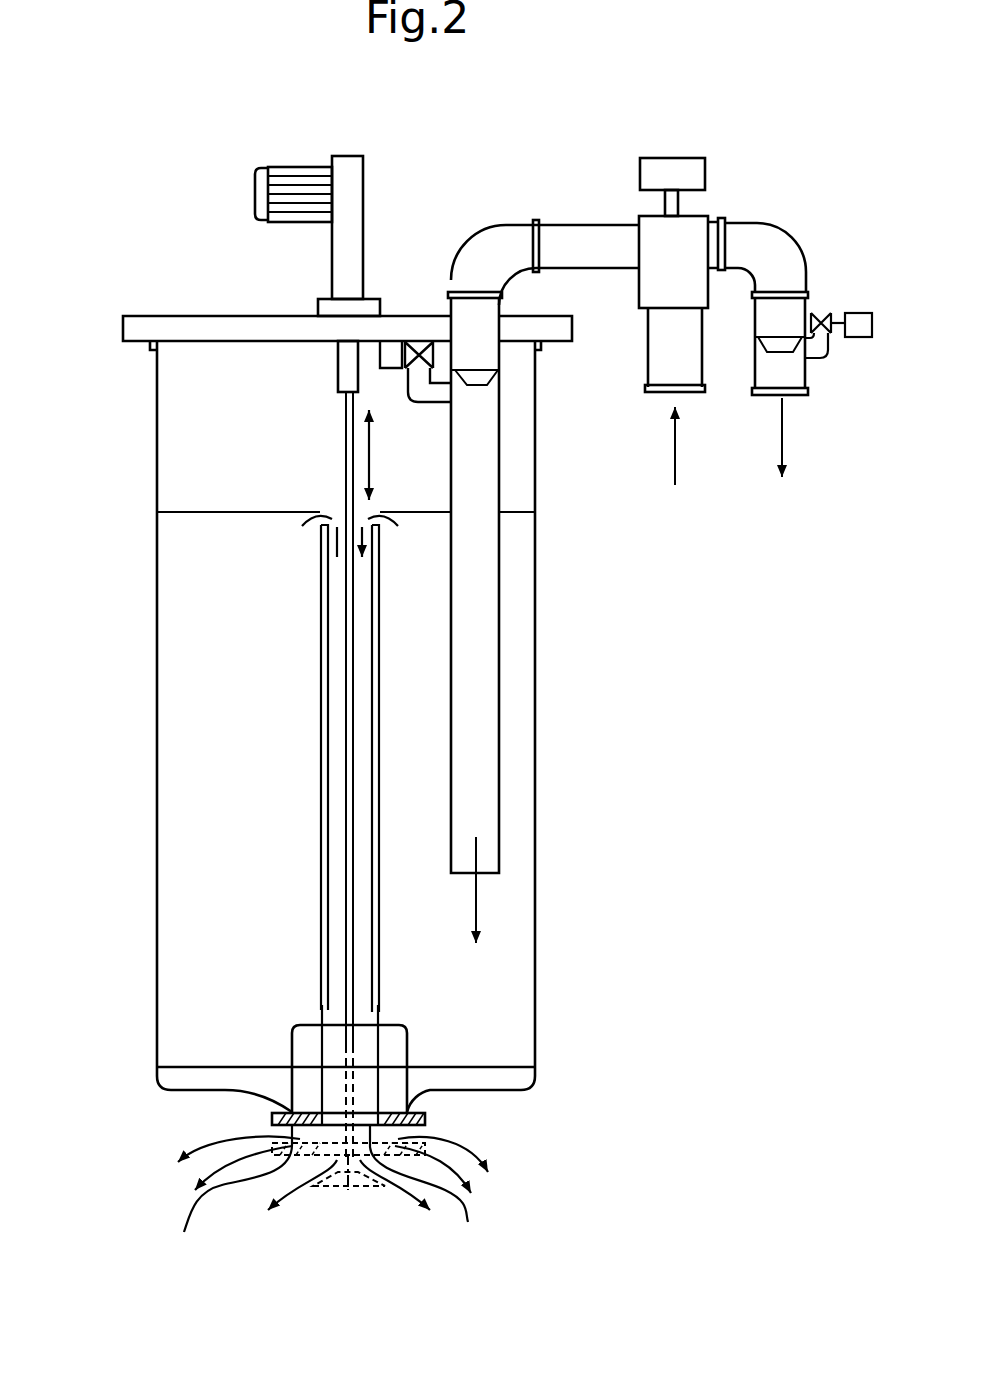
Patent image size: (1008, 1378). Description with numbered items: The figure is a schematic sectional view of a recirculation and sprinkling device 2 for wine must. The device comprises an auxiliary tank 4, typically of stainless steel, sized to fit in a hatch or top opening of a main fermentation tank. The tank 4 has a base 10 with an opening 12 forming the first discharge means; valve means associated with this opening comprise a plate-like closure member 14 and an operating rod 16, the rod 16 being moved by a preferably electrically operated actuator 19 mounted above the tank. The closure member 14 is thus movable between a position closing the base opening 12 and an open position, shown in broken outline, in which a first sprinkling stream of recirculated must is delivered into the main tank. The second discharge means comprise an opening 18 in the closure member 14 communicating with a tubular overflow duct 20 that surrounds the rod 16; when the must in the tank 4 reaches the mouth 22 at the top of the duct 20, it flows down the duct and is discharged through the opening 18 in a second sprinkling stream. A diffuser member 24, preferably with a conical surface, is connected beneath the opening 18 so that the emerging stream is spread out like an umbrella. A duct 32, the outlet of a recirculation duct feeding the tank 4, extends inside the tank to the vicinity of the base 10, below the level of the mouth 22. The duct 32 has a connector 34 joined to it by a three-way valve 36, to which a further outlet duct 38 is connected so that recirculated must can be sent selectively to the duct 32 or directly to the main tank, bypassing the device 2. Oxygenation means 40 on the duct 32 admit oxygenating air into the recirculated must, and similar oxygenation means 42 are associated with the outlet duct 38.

The recirculation and sprinkling device 2 is at (153, 753).
The tank 4 is at (535, 892).
The base 10 is at (497, 1092).
The opening 12 is at (388, 1108).
The closure member 14 is at (249, 1199).
The operating rod 16 is at (348, 943).
The opening 18 is at (433, 1195).
The actuator 19 is at (338, 258).
The tubular overflow duct 20 is at (324, 817).
The mouth 22 is at (333, 524).
The diffuser member 24 is at (337, 1190).
The duct 32 is at (486, 700).
The connector 34 is at (657, 362).
The three-way valve 36 is at (680, 248).
The outlet duct 38 is at (783, 258).
The oxygenation means 40 is at (423, 333).
The oxygenation means 42 is at (862, 328).